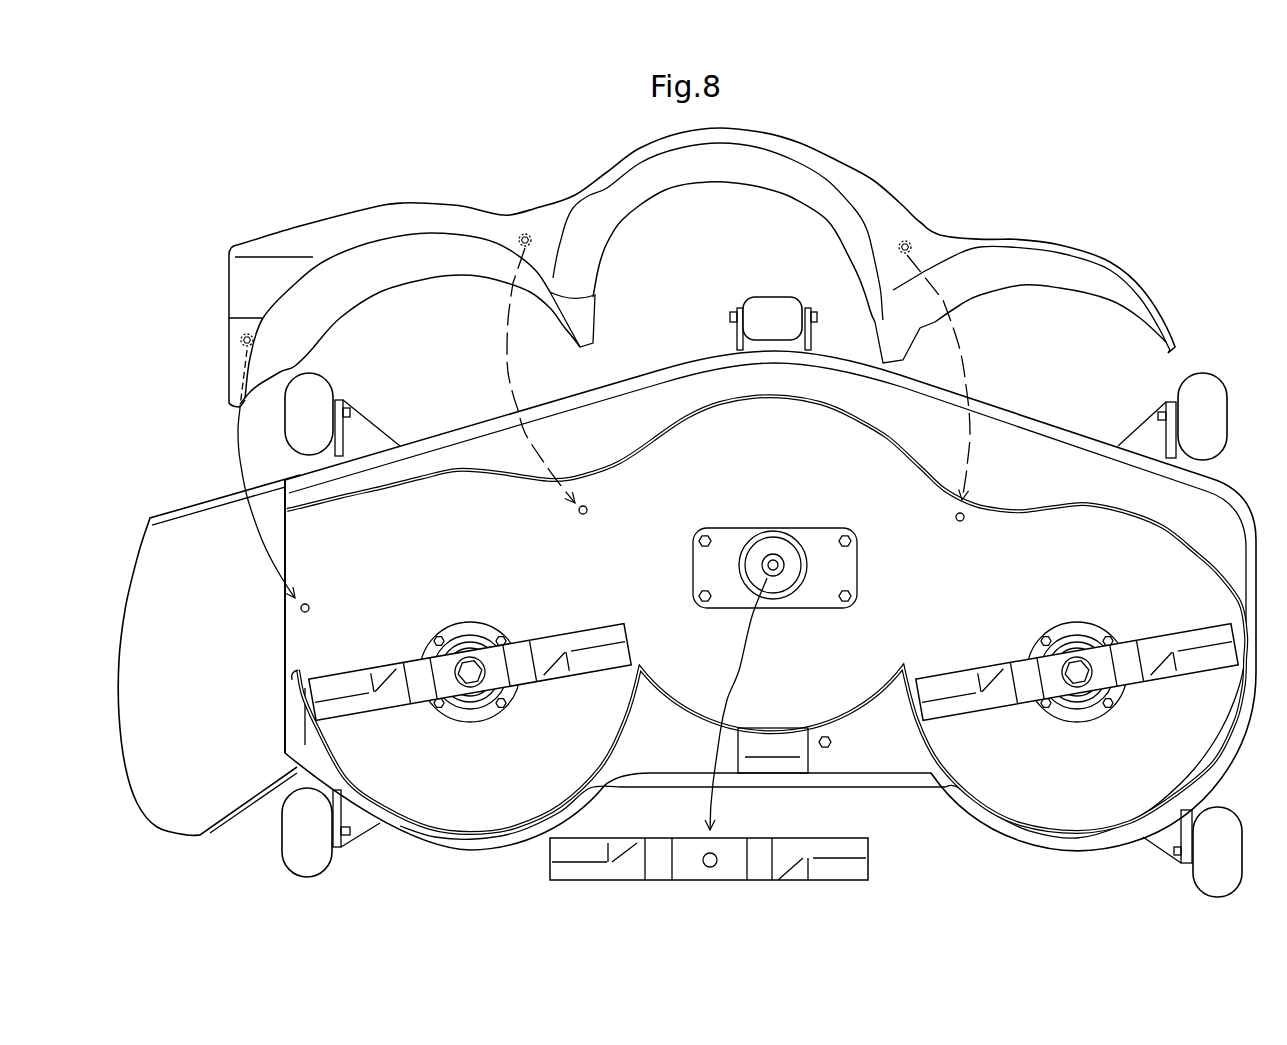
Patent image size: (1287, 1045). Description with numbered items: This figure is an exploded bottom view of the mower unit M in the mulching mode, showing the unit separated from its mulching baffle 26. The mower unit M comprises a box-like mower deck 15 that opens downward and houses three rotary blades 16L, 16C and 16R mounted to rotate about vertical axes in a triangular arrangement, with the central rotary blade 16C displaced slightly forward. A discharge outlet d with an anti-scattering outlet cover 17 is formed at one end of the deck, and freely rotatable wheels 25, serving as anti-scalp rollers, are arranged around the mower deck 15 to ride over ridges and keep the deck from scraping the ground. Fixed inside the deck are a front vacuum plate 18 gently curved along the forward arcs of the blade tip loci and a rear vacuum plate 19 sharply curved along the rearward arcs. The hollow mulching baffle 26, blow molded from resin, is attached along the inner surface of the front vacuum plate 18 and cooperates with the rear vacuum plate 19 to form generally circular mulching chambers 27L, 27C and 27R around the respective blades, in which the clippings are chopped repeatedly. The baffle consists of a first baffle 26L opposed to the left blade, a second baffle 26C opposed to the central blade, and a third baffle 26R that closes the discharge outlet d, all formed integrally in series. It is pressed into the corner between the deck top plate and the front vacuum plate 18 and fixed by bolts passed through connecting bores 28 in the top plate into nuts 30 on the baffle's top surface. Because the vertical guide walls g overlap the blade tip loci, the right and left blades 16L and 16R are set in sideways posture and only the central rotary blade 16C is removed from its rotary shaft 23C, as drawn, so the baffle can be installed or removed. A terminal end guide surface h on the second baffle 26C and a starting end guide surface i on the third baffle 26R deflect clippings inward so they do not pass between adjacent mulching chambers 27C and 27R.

The mower deck 15 is at (1030, 417).
The right rotary blade 16R is at (557, 637).
The central rotary blade 16C is at (835, 843).
The left rotary blade 16L is at (1160, 640).
The anti-scattering outlet cover 17 is at (205, 497).
The front vacuum plate 18 is at (638, 455).
The rear vacuum plate 19 is at (627, 727).
The rotary shaft of the central rotary blade 23C is at (775, 556).
The freely rotatable wheels (anti-scalp rollers) 25 is at (318, 382).
The mulching baffle 26 is at (1122, 260).
The third baffle 26R is at (377, 222).
The second baffle 26C is at (783, 150).
The first baffle 26L is at (1067, 247).
The right mulching chamber 27R is at (468, 761).
The central mulching chamber 27C is at (796, 666).
The left mulching chamber 27L is at (1077, 771).
The connecting bores 28 is at (312, 610).
The nuts 30 is at (240, 346).
The vertical guide wall g is at (388, 266).
The terminal end guide surface h is at (582, 323).
The starting end guide surface i is at (563, 335).
The mower unit M is at (693, 357).
The discharge outlet d is at (273, 609).